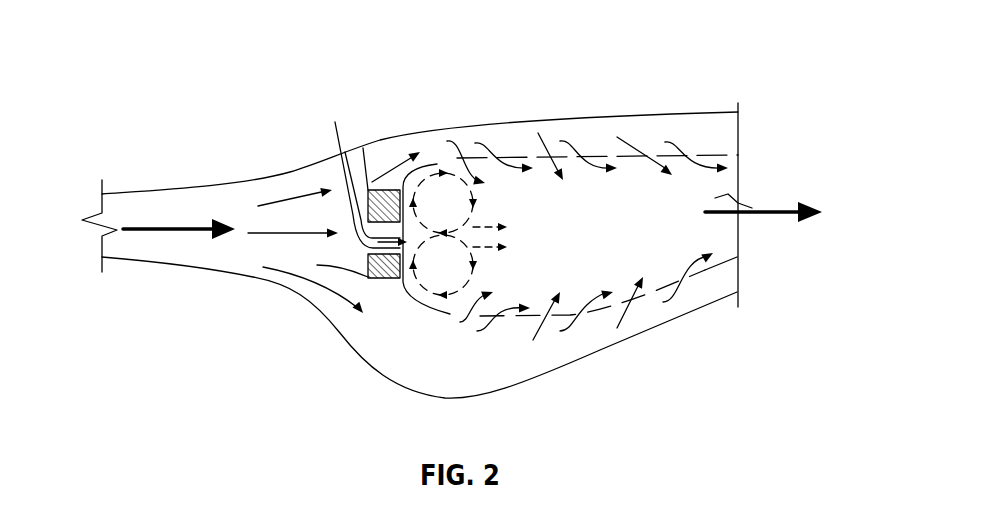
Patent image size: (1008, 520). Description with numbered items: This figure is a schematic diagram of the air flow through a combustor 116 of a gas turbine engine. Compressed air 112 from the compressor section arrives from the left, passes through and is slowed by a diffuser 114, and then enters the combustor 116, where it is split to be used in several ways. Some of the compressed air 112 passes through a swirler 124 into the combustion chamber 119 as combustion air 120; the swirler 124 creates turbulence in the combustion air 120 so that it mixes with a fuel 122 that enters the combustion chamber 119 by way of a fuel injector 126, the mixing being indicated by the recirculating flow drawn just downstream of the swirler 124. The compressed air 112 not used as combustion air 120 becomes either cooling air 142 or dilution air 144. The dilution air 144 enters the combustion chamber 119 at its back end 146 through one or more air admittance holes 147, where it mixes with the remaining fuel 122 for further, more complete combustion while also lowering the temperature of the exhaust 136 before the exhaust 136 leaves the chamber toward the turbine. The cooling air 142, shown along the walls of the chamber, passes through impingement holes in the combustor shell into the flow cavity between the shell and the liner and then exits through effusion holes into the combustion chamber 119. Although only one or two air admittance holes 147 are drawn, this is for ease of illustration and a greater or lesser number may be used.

The compressed air 112 is at (169, 233).
The diffuser 114 is at (232, 207).
The combustor 116 is at (599, 61).
The combustion chamber 119 is at (593, 247).
The combustion air 120 is at (262, 236).
The fuel 122 is at (342, 128).
The swirler 124 is at (375, 292).
The fuel injector 126 is at (333, 215).
The exhaust 136 is at (767, 214).
The cooling air 142 is at (493, 330).
The dilution air 144 is at (638, 308).
The back end 146 is at (712, 368).
The air admittance holes 147 is at (647, 300).